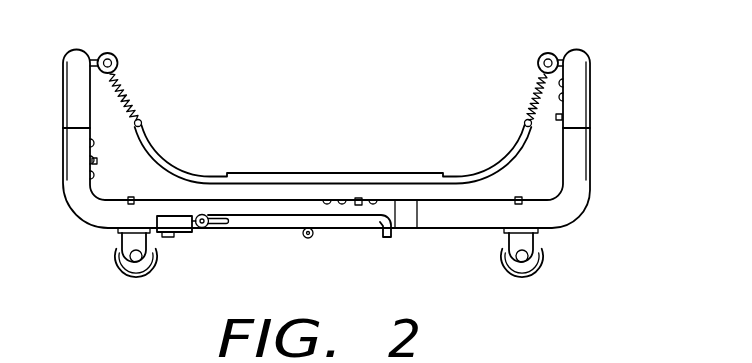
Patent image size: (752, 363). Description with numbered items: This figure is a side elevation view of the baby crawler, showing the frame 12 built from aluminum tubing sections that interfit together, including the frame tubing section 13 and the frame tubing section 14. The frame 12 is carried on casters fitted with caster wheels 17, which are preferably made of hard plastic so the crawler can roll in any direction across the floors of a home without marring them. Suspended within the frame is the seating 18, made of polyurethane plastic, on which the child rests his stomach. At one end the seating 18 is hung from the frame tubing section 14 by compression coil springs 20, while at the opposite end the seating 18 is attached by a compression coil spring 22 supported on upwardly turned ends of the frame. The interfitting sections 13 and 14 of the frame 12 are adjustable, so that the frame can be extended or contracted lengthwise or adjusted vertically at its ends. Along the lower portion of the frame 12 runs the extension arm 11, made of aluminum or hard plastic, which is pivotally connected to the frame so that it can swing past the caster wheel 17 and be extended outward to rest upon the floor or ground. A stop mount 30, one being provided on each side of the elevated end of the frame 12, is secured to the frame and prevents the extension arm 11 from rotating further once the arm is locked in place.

The extension arm 11 is at (263, 220).
The frame 12 is at (177, 213).
The frame tubing section 13 is at (480, 213).
The frame tubing section 14 is at (583, 62).
The caster wheels 17 is at (118, 264).
The seating 18 is at (358, 180).
The compression coil springs 20 is at (527, 97).
The compression coil spring 22 is at (123, 92).
The stop mounts 30 is at (173, 237).